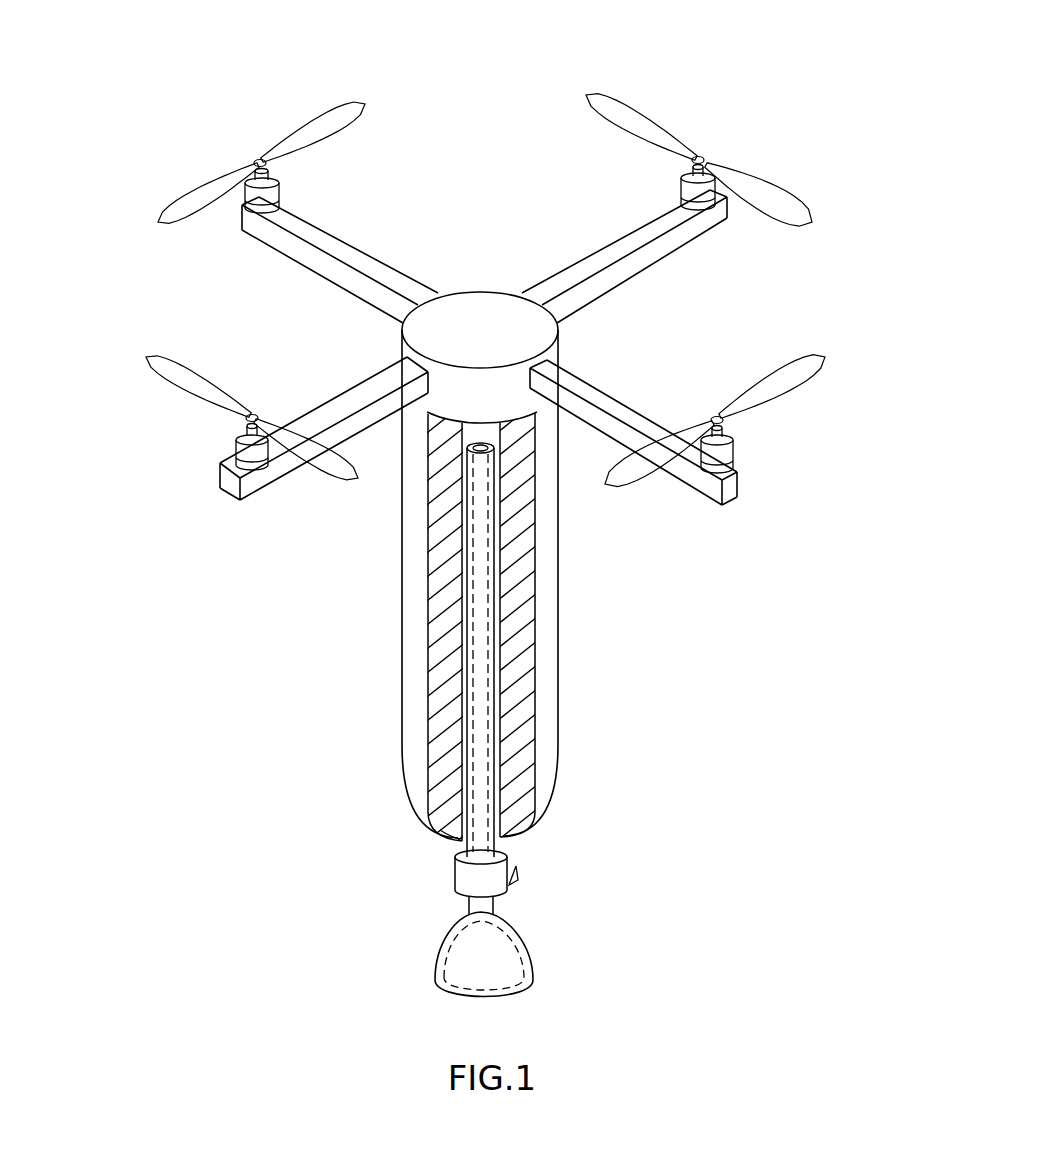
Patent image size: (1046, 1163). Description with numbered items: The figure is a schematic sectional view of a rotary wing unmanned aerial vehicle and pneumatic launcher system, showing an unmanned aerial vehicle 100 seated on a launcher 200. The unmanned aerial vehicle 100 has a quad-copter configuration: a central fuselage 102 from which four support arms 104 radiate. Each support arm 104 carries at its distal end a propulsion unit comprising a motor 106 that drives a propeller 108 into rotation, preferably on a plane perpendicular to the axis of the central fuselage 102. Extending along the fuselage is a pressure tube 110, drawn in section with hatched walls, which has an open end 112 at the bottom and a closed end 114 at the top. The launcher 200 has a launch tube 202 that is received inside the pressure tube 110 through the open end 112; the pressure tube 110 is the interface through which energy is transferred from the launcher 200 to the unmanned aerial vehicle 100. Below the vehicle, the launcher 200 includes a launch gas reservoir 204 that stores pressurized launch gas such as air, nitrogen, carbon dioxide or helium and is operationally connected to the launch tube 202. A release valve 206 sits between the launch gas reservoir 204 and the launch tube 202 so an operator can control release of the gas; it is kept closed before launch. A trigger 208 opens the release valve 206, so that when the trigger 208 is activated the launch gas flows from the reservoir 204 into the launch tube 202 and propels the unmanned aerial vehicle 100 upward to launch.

The unmanned aerial vehicle 100 is at (400, 697).
The central fuselage 102 is at (443, 617).
The support arm 104 is at (350, 257).
The motor 106 is at (278, 177).
The propeller 108 is at (302, 127).
The pressure tube 110 is at (503, 730).
The open end 112 is at (460, 822).
The closed end 114 is at (480, 423).
The launcher 200 is at (452, 913).
The launch tube 202 is at (482, 663).
The launch gas reservoir 204 is at (493, 973).
The release valve 206 is at (507, 853).
The trigger 208 is at (514, 867).